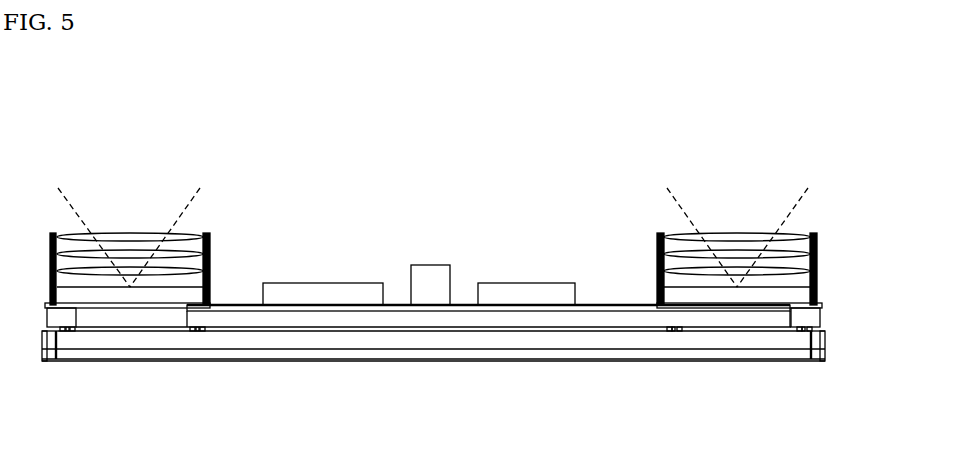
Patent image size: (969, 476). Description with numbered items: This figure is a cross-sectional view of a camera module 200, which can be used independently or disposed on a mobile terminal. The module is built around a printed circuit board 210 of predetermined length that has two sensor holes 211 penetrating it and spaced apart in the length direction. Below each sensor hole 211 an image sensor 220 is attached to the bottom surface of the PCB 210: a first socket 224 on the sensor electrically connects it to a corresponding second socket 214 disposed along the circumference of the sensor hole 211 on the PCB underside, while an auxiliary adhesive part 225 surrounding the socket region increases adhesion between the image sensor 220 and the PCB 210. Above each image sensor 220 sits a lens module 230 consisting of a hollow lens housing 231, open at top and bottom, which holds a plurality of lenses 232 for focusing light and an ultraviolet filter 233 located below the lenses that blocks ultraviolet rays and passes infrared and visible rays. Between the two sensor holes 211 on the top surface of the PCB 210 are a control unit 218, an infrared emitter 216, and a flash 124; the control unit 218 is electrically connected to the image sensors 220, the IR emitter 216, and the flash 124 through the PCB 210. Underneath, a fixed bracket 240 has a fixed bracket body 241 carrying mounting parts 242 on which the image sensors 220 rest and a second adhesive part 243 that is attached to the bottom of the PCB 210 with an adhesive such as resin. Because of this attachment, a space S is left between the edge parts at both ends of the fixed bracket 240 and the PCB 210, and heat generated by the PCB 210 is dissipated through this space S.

The camera module 200 is at (401, 198).
The printed circuit board 210 is at (245, 312).
The sensor hole 211 is at (152, 323).
The second socket 214 is at (81, 334).
The infrared emitter 216 is at (430, 265).
The control unit 218 is at (322, 283).
The image sensor 220 is at (143, 345).
The first socket 224 is at (71, 333).
The auxiliary adhesive part 225 is at (196, 328).
The lens module 230 is at (213, 256).
The lens housing 231 is at (210, 240).
The lens 232 is at (131, 240).
The ultraviolet filter 233 is at (102, 296).
The fixed bracket 240 is at (435, 366).
The fixed bracket body 241 is at (573, 351).
The mounting part 242 is at (211, 345).
The second adhesive part 243 is at (291, 330).
The flash 124 is at (527, 283).
The space S is at (44, 335).